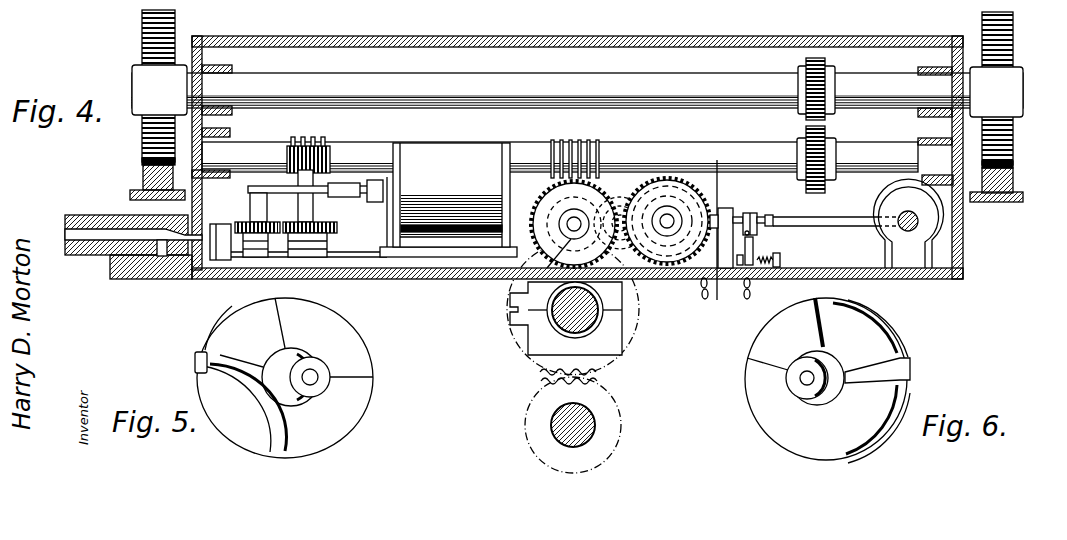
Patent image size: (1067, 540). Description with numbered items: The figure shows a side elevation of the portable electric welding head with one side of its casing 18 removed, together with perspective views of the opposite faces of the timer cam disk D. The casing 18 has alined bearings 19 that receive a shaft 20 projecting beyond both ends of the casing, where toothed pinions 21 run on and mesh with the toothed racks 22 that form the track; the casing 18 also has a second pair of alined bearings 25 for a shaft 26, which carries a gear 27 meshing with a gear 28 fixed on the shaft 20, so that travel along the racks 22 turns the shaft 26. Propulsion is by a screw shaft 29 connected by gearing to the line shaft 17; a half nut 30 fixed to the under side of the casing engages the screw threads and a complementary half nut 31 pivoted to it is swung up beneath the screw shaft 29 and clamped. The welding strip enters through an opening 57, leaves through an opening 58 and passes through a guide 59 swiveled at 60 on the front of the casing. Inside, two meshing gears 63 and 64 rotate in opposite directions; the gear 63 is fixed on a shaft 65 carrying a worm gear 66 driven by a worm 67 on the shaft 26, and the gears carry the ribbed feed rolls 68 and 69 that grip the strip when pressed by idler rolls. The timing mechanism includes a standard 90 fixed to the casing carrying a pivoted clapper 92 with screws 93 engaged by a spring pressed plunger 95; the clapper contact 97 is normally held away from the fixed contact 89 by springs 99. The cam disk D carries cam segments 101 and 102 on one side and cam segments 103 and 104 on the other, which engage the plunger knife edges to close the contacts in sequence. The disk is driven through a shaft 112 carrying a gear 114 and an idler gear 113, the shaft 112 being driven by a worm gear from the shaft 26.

In FIG. 4, the line shaft 17 is at (597, 430).
In FIG. 4, the metal casing 18 is at (225, 37).
In FIG. 4, the alined bearings 19 is at (234, 70).
In FIG. 4, the shaft 20 is at (441, 80).
In FIG. 4, the toothed pinions 21 is at (144, 30).
In FIG. 4, the toothed racks 22 is at (143, 176).
In FIG. 4, the alined bearings 25 is at (224, 134).
In FIG. 4, the shaft 26 is at (636, 146).
In FIG. 4, the gear 27 is at (815, 194).
In FIG. 4, the gear 28 is at (826, 63).
In FIG. 4, the screw shaft 29 is at (565, 318).
In FIG. 4, the half nut 30 is at (608, 297).
In FIG. 4, the complementary half nut 31 is at (608, 341).
In FIG. 4, the opening 57 is at (958, 240).
In FIG. 4, the opening 58 is at (212, 236).
In FIG. 4, the guide 59 is at (105, 250).
In FIG. 4, the swivel 60 is at (164, 257).
In FIG. 4, the gear 63 is at (334, 222).
In FIG. 4, the gear 64 is at (250, 224).
In FIG. 4, the shaft 65 is at (304, 208).
In FIG. 4, the worm gear 66 is at (334, 152).
In FIG. 4, the worm 67 is at (305, 139).
In FIG. 4, the feed roll 68 is at (338, 234).
In FIG. 4, the feed roll 69 is at (243, 236).
In FIG. 4, the fixed contact 89 is at (725, 291).
In FIG. 4, the standard 90 is at (727, 209).
In FIG. 4, the clapper 92 is at (750, 213).
In FIG. 4, the screws 93 is at (769, 216).
In FIG. 4, the spring pressed plunger 95 is at (718, 222).
In FIG. 4, the contact 97 is at (754, 254).
In FIG. 4, the springs 99 is at (781, 261).
In FIG. 5, the cam segment 101 is at (277, 328).
In FIG. 6, the cam segment 101 is at (896, 322).
In FIG. 5, the cam segment 102 is at (362, 400).
In FIG. 6, the cam segment 102 is at (918, 393).
In FIG. 5, the cam segment 103 is at (195, 364).
In FIG. 6, the cam segment 103 is at (912, 366).
In FIG. 6, the cam segment 104 is at (754, 339).
In FIG. 4, the shaft 112 is at (574, 209).
In FIG. 4, the idler gear 113 is at (545, 181).
In FIG. 4, the gear 114 is at (572, 139).
In FIG. 5, the cam disk D is at (362, 352).